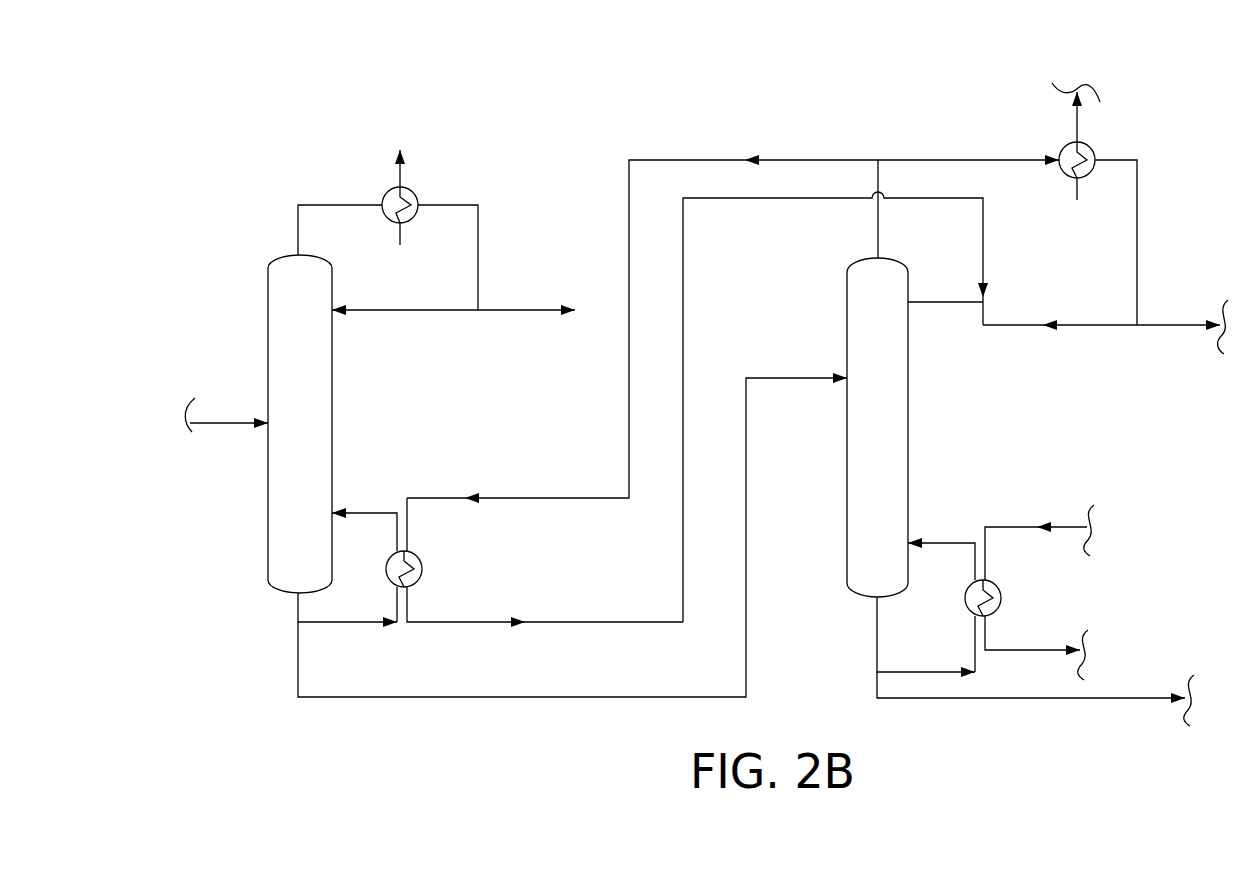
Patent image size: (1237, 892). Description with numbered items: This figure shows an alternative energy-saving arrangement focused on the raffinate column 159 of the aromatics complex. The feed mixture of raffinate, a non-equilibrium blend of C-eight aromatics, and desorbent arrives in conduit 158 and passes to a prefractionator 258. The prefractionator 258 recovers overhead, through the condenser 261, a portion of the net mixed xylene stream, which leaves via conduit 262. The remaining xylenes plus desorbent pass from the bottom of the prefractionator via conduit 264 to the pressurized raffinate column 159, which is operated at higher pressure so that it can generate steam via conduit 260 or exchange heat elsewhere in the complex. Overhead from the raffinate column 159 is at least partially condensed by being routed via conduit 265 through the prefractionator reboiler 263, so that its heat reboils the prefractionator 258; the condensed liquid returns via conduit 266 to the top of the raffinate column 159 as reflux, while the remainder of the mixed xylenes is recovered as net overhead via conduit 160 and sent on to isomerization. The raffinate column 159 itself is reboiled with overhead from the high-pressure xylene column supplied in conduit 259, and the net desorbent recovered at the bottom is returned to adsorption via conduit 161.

The conduit 158 is at (226, 399).
The prefractionator 258 is at (332, 420).
The condenser 261 is at (412, 190).
The conduit 262 is at (530, 308).
The prefractionator reboiler 263 is at (422, 569).
The conduit 264 is at (452, 694).
The conduit 265 is at (696, 158).
The conduit 266 is at (683, 298).
The raffinate column 159 is at (908, 418).
The conduit 260 is at (1078, 125).
The conduit 160 is at (1170, 324).
The conduit 259 is at (1004, 525).
The conduit 161 is at (1135, 697).